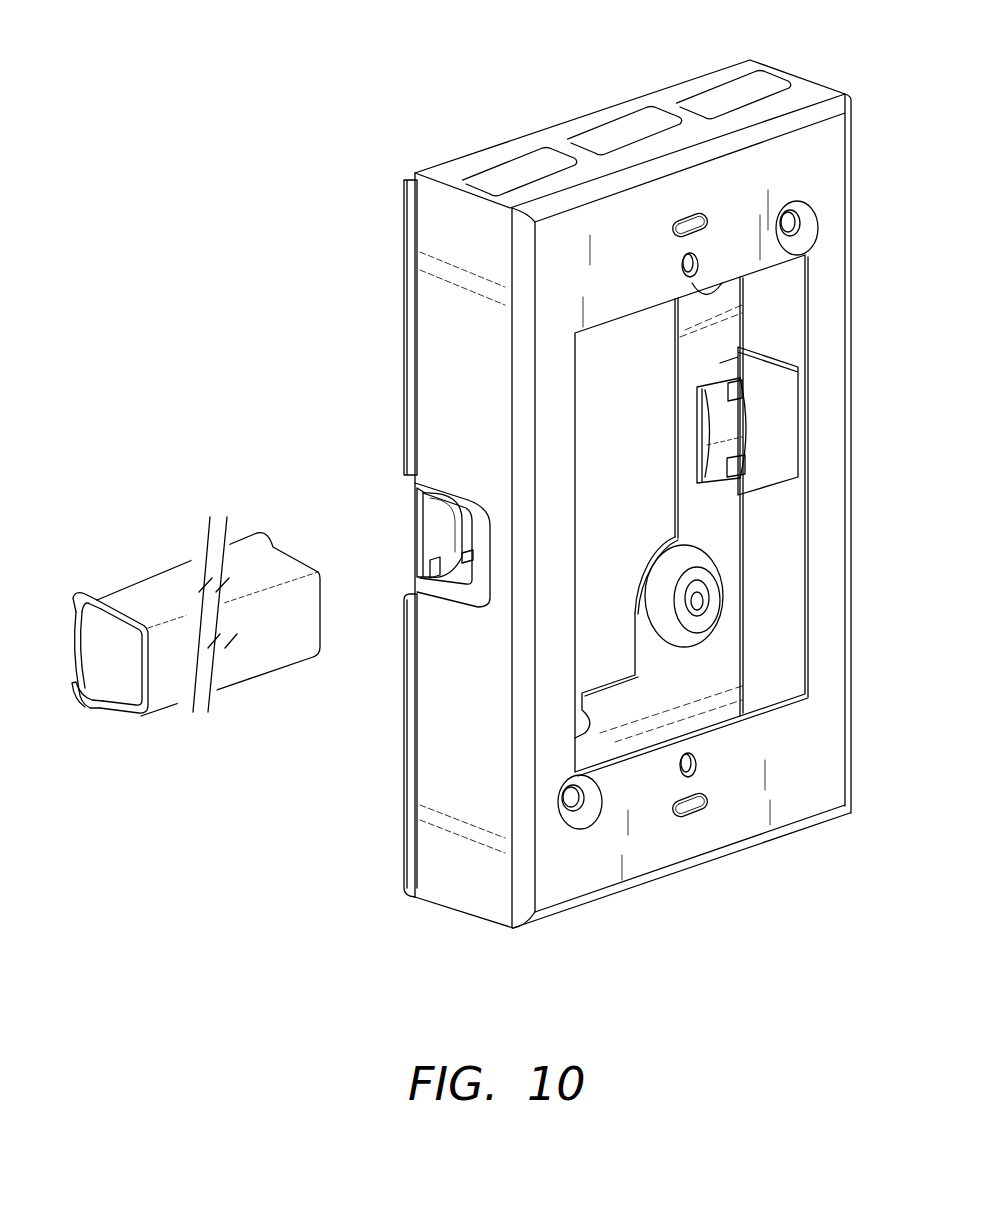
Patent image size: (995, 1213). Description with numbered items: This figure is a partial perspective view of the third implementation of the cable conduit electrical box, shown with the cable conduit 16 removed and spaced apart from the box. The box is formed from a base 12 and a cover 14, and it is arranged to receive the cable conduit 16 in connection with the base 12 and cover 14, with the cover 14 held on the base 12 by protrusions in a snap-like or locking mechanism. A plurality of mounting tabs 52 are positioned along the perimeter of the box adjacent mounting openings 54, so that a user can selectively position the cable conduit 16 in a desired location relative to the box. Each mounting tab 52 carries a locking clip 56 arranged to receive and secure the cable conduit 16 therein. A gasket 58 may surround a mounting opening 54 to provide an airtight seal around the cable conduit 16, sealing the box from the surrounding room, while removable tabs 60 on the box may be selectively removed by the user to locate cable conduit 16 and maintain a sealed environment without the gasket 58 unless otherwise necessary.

The base 12 is at (404, 175).
The cover 14 is at (530, 132).
The cable conduit 16 is at (203, 553).
The mounting tab 52 is at (418, 507).
The mounting opening 54 is at (465, 557).
The locking clip 56 is at (418, 543).
The gasket 58 is at (418, 582).
The removable tab 60 is at (515, 150).